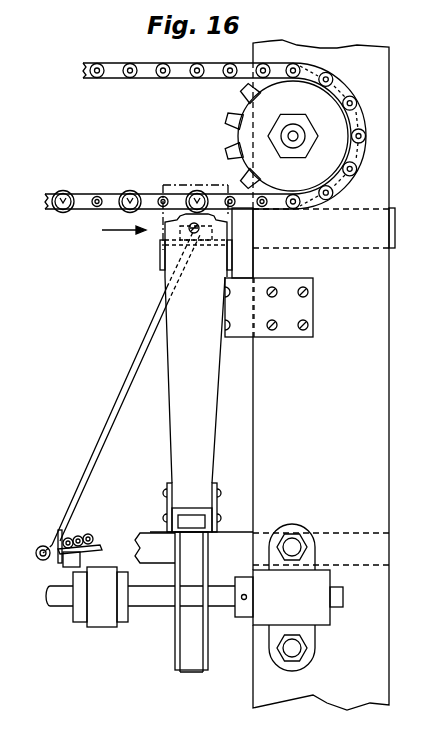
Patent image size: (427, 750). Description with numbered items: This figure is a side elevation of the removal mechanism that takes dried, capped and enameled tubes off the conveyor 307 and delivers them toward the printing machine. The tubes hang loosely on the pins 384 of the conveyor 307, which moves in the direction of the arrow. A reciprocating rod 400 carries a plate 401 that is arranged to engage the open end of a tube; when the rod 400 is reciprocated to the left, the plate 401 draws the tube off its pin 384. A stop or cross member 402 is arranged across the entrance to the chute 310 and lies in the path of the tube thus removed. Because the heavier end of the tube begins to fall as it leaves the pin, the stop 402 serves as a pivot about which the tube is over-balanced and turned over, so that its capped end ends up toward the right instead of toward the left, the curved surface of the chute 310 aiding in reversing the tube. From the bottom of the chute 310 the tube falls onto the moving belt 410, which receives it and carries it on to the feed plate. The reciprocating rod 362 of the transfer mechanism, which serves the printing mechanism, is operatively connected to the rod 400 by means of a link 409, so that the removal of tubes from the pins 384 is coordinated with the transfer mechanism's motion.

The conveyor 307 is at (213, 64).
The pins 384 is at (67, 192).
The plate 401 is at (180, 193).
The stop or cross member 402 is at (160, 261).
The reciprocating rod 400 is at (198, 251).
The link 409 is at (129, 367).
The chute 310 is at (201, 404).
The reciprocating rod 362 is at (43, 546).
The belt 410 is at (192, 672).